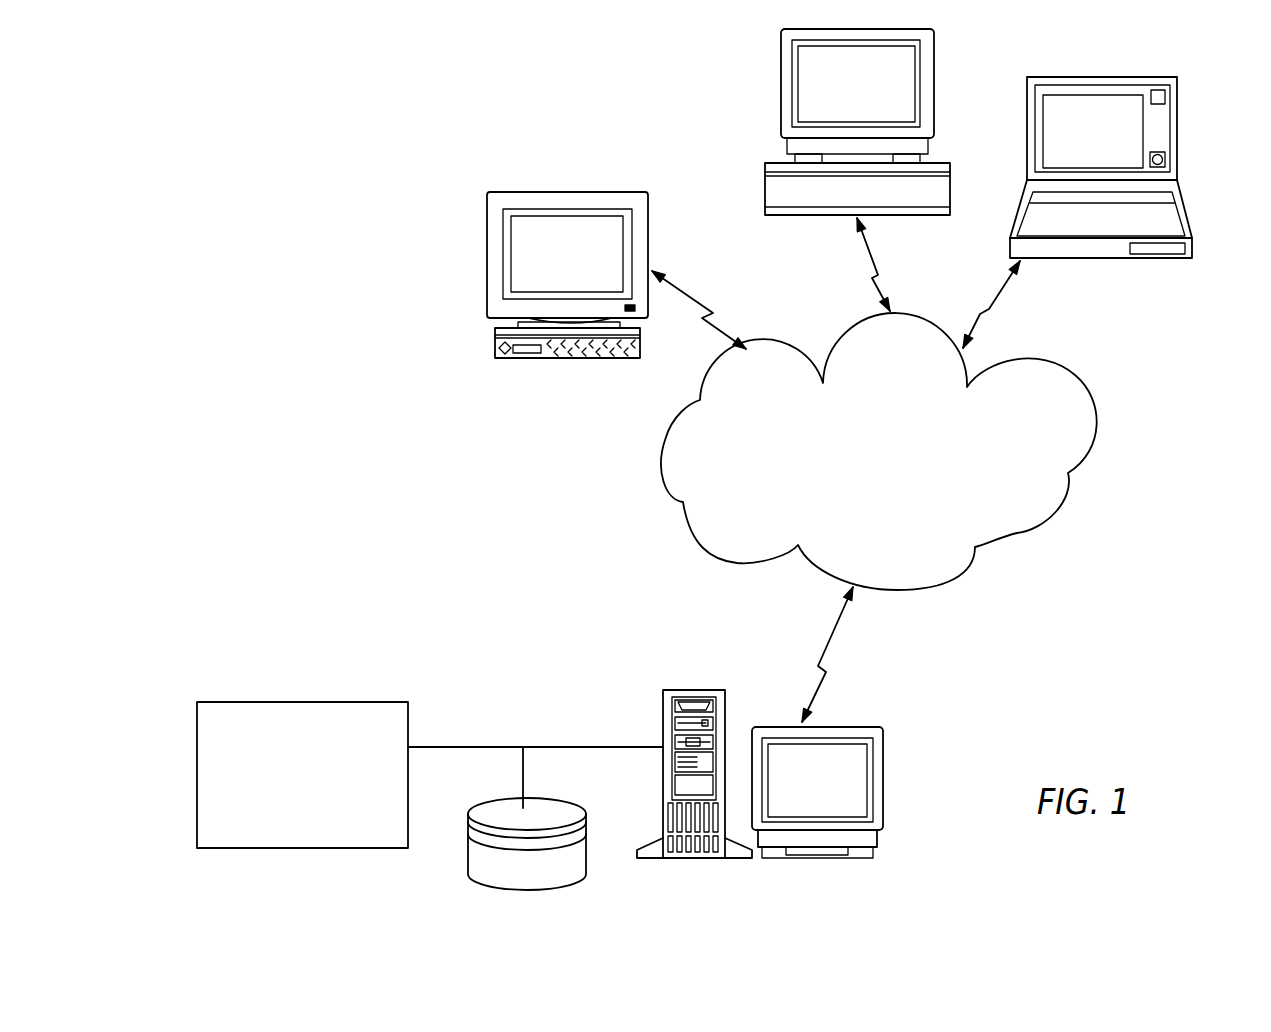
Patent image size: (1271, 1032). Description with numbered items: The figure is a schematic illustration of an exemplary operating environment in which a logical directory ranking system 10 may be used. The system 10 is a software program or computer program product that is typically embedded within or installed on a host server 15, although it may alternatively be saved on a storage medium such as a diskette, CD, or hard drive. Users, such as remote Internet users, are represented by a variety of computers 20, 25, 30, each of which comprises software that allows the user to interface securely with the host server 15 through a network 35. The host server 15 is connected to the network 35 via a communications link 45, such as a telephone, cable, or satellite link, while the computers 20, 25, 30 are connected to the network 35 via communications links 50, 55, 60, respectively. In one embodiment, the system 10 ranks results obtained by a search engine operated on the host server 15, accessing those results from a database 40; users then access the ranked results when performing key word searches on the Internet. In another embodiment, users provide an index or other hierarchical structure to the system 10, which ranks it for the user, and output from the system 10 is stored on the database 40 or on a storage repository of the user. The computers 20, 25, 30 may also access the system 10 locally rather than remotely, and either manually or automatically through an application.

The logical directory ranking system 10 is at (243, 702).
The host server 15 is at (682, 690).
The computer 20 is at (648, 247).
The computer 25 is at (935, 70).
The computer 30 is at (1188, 203).
The network 35 is at (1098, 430).
The database 40 is at (468, 856).
The communications link 45 is at (848, 610).
The communications link 50 is at (722, 327).
The communications link 55 is at (865, 243).
The communications link 60 is at (1005, 285).